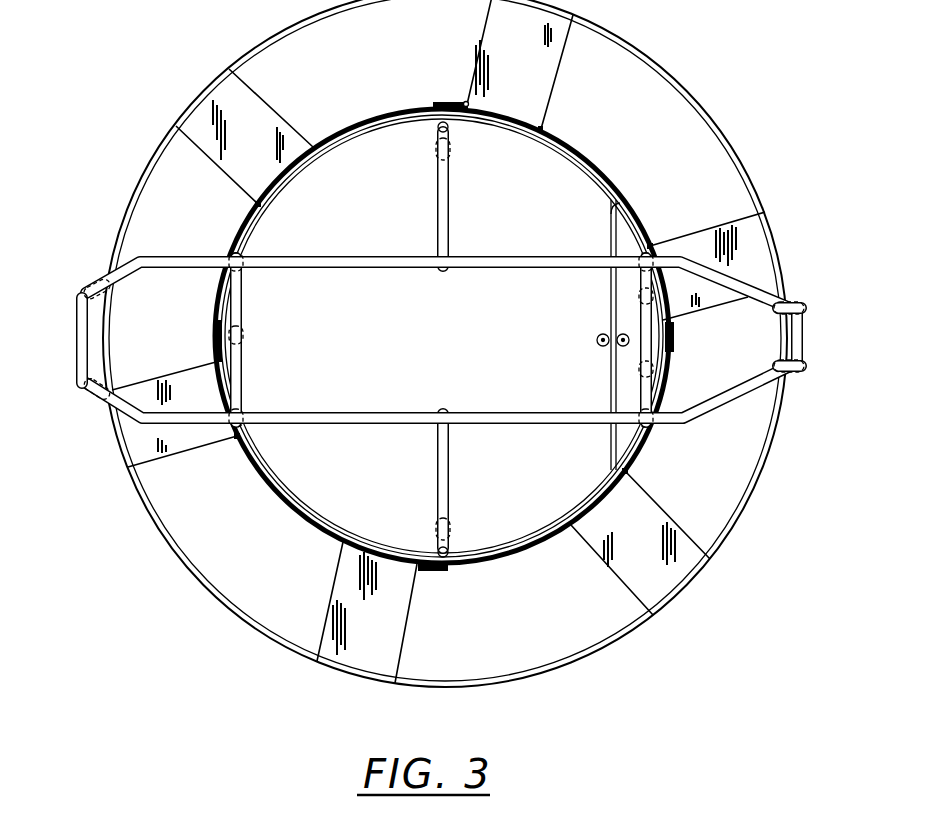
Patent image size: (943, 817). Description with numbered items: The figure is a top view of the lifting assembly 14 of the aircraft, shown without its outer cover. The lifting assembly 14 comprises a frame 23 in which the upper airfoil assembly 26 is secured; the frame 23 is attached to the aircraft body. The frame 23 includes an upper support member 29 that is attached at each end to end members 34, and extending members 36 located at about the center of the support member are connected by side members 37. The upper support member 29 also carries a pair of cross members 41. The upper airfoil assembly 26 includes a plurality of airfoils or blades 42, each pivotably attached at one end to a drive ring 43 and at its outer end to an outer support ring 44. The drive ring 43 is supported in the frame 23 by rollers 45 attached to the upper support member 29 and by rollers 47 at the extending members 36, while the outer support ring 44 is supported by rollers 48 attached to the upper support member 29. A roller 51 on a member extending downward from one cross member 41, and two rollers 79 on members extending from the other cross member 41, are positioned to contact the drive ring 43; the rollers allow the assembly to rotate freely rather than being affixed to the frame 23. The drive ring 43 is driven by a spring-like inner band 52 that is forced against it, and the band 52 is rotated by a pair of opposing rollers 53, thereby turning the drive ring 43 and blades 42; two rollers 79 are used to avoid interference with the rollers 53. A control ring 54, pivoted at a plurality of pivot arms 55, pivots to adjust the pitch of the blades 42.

The lifting assembly 14 is at (698, 56).
The frame 23 is at (388, 273).
The upper airfoil assembly 26 is at (738, 152).
The upper support member 29 is at (340, 410).
The end member 34 is at (78, 331).
The extending member 36 is at (448, 186).
The side member 37 is at (437, 158).
The cross member 41 is at (243, 315).
The airfoil or blade 42 is at (195, 122).
The drive ring 43 is at (622, 226).
The outer support ring 44 is at (230, 609).
The roller 45 is at (255, 258).
The roller 47 is at (449, 128).
The roller 48 is at (90, 283).
The roller 51 is at (246, 336).
The inner band 52 is at (611, 240).
The opposing roller 53 is at (601, 346).
The control ring 54 is at (286, 515).
The pivot arm 55 is at (435, 100).
The roller 79 is at (640, 300).